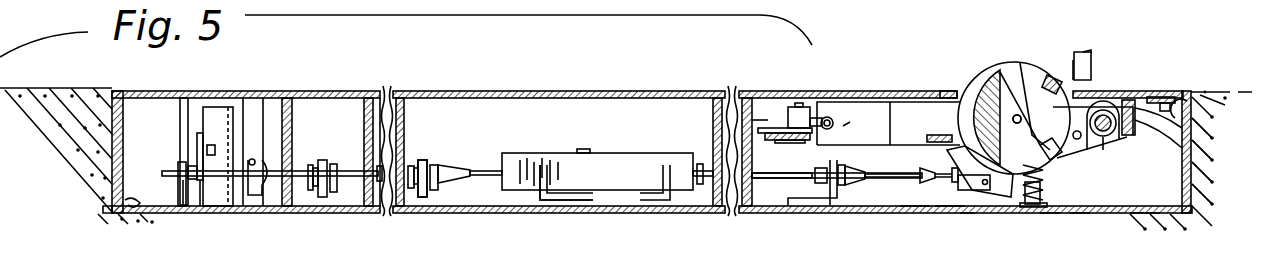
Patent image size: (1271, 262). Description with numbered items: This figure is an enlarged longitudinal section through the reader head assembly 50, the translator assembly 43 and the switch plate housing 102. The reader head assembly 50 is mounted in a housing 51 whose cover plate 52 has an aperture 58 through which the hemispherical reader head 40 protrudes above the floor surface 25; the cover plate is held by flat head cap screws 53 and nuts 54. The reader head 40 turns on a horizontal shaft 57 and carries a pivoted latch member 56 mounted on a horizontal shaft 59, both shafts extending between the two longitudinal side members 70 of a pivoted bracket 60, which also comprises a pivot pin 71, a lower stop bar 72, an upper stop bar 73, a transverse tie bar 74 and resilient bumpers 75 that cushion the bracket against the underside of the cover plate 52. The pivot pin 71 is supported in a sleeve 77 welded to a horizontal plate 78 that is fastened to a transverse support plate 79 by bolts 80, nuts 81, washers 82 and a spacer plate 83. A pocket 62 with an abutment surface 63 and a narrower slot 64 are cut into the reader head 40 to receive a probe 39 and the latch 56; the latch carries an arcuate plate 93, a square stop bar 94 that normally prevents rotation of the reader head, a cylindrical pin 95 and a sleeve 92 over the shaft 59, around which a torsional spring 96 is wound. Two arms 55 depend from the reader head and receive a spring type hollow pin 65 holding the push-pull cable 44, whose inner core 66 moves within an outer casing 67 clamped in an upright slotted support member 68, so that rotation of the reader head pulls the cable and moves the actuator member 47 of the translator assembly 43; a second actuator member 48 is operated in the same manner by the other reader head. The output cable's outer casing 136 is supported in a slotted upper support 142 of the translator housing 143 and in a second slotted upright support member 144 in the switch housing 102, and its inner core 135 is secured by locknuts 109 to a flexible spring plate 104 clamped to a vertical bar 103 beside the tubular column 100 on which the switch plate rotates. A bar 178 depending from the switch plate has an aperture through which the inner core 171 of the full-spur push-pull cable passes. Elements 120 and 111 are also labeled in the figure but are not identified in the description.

The bar 178 is at (263, 98).
The outer casing 136 is at (380, 163).
The translator assembly 43 is at (562, 128).
The floor surface 25 is at (650, 91).
The spacer plate 83 is at (780, 128).
The horizontal plate 78 is at (796, 107).
The nuts 81 is at (803, 106).
The sleeve 77 is at (829, 117).
The longitudinal side members 70 is at (877, 102).
The cover plate 52 is at (892, 91).
The aperture 58 is at (950, 91).
The reader head 40 is at (967, 70).
The slot 64 is at (998, 72).
The pocket 62 is at (1021, 62).
The pivoted latch member 56 is at (1035, 54).
The abutment surface 63 is at (1055, 75).
The transverse arcuate shaped plate 93 is at (1075, 60).
The probe 39 is at (1097, 55).
The upper stop bar 73 is at (1093, 82).
The flat head cap screws 53 is at (1165, 96).
The vertical bar 103 is at (178, 113).
The flexible spring plate 104 is at (197, 143).
The vertical tubular column 100 is at (233, 133).
The transverse support plate 79 is at (752, 120).
The pivot pin 71 is at (860, 122).
The horizontal shaft 57 is at (1013, 119).
The washers 82 is at (785, 140).
The bolts 80 is at (797, 142).
The bracket 60 is at (882, 127).
The lower stop bar 72 is at (932, 142).
The torsional spring 96 is at (1118, 132).
The cylindrical pin 95 is at (1077, 140).
The horizontal shaft 59 is at (1128, 148).
The square stop bar 94 is at (1062, 152).
The nuts 54 is at (1204, 131).
The upper resilient bumpers 75 is at (1200, 154).
The transverse tie bar 74 is at (1202, 171).
The housing 51 is at (1188, 194).
The switch plate housing 102 is at (133, 217).
The locknut 109 is at (190, 208).
The inner core 171 is at (262, 200).
The inner core 135 is at (300, 195).
The slotted upright support member 144 is at (330, 205).
The slotted upper support 142 is at (428, 207).
The housing 143 is at (458, 204).
The outer casing 67 is at (785, 183).
The upright slotted support member 68 is at (835, 203).
The push-pull cable 44 is at (886, 192).
The inner core 66 is at (907, 213).
The reader head assembly 50 is at (946, 220).
The spring type hollow pin 65 is at (985, 208).
The arms 55 is at (1035, 208).
The actuator member 48 is at (968, 232).
The plate 120 is at (1040, 250).
The plate 111 is at (1084, 237).
The sleeve 92 is at (1103, 150).
The actuator member 47 is at (1130, 258).